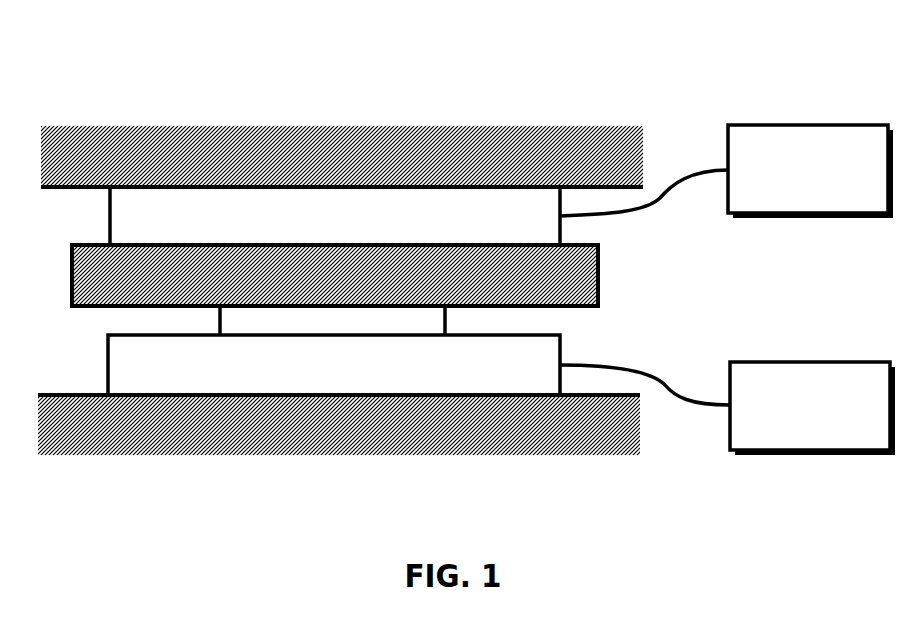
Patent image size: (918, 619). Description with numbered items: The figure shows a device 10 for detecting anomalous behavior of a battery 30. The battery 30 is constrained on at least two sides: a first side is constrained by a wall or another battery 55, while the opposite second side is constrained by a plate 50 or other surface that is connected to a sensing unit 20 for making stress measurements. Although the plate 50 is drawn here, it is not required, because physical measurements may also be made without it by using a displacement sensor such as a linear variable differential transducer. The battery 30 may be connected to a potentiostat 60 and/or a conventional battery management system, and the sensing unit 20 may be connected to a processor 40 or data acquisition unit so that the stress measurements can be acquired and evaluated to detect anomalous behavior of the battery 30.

The device 10 is at (89, 43).
The sensing unit 20 is at (334, 350).
The battery 30 is at (335, 216).
The processor 40 is at (727, 408).
The plate 50 is at (598, 275).
The wall or another battery 55 is at (342, 126).
The potentiostat 60 is at (726, 171).